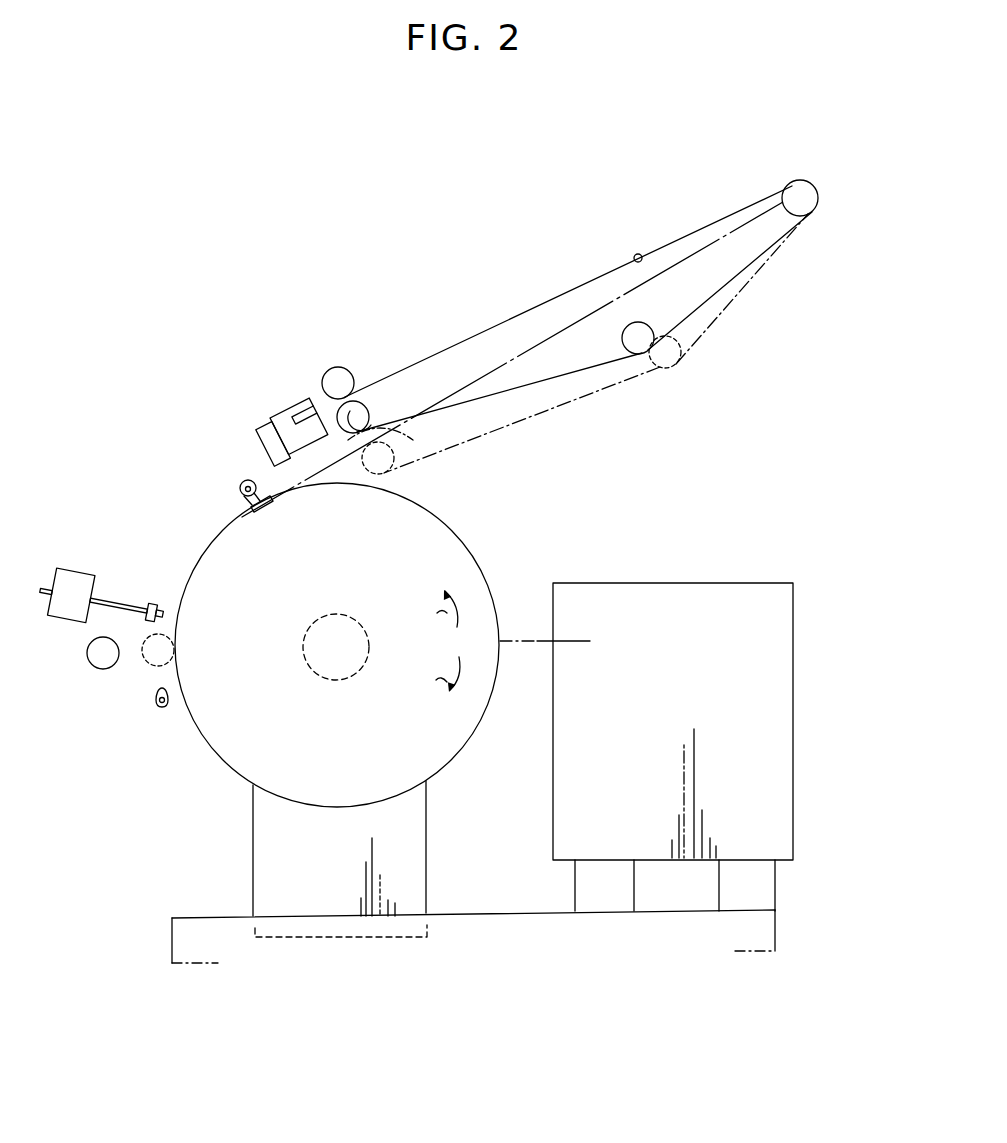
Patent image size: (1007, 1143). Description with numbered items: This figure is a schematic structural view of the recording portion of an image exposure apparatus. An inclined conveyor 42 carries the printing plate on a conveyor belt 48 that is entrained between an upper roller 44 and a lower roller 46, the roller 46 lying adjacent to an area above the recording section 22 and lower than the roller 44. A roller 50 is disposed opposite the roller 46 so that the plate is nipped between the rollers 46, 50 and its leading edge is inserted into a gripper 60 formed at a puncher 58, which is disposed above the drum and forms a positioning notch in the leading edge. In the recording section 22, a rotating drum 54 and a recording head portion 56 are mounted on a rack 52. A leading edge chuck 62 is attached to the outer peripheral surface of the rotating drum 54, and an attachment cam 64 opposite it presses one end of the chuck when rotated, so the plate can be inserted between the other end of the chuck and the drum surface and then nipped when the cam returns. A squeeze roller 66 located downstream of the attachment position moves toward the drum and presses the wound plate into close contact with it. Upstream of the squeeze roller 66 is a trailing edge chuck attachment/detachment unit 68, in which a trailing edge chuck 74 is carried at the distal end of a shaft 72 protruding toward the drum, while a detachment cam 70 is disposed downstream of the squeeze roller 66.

The recording section 22 is at (568, 544).
The conveyor 42 is at (587, 241).
The roller 44 is at (797, 192).
The roller 46 is at (369, 401).
The conveyor belt 48 is at (642, 262).
The roller 50 is at (357, 371).
The rack 52 is at (200, 933).
The rotating drum 54 is at (447, 750).
The recording head portion 56 is at (667, 602).
The puncher 58 is at (287, 408).
The gripper 60 is at (322, 388).
The leading edge chuck 62 is at (263, 486).
The attachment cam 64 is at (237, 480).
The squeeze roller 66 is at (100, 660).
The trailing edge chuck attachment/detachment unit 68 is at (108, 578).
The detachment cam 70 is at (160, 724).
The shaft 72 is at (128, 600).
The trailing edge chuck 74 is at (155, 596).